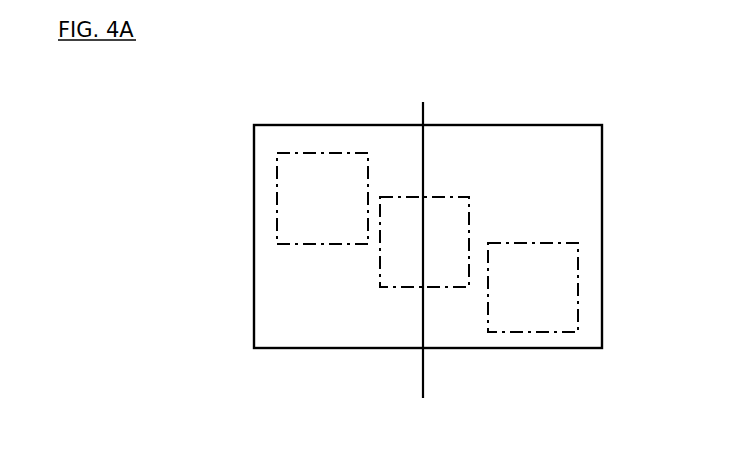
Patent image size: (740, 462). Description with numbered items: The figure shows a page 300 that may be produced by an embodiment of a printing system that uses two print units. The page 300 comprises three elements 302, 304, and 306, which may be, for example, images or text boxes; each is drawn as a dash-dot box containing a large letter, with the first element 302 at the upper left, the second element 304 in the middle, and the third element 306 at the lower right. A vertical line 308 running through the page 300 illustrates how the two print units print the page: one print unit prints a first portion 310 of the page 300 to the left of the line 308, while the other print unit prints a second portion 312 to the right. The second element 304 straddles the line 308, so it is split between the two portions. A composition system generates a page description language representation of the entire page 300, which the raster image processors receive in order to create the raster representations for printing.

The page 300 is at (253, 177).
The element 302 is at (345, 247).
The element 304 is at (436, 197).
The element 306 is at (528, 242).
The line 308 is at (421, 116).
The first portion 310 is at (352, 349).
The second portion 312 is at (525, 350).